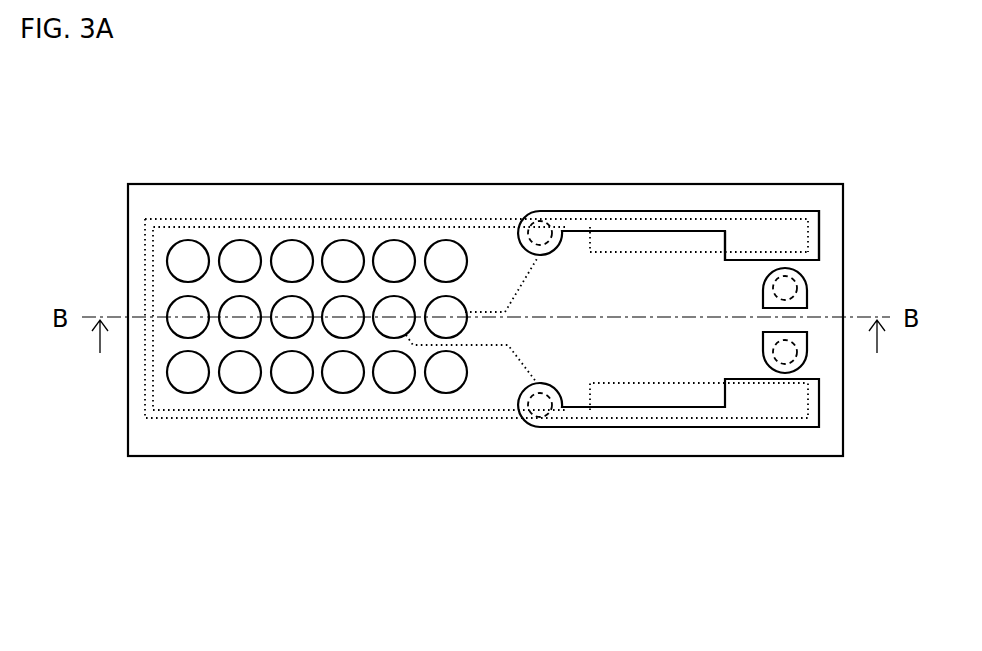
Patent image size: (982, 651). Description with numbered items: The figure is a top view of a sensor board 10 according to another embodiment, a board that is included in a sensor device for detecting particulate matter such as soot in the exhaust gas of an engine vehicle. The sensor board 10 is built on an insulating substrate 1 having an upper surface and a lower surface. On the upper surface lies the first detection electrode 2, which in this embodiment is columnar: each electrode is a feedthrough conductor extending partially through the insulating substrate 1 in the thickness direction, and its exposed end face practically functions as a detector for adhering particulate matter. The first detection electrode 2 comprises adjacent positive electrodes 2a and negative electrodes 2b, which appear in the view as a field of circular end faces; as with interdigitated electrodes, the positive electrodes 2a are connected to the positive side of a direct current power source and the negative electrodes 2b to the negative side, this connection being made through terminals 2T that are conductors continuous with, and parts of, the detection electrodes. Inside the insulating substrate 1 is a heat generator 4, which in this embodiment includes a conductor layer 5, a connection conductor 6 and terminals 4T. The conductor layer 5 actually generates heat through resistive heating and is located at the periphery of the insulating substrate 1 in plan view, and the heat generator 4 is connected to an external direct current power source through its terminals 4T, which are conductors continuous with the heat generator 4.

The sensor board 10 is at (197, 132).
The insulating substrate 1 is at (810, 195).
The first detection electrode 2 is at (339, 241).
The positive electrode 2a is at (442, 303).
The negative electrode 2b is at (390, 303).
The terminal 2T is at (787, 230).
The terminal 4T is at (797, 293).
The heat generator 4 is at (407, 533).
The conductor layer 5 is at (405, 420).
The connection conductor 6 is at (612, 390).